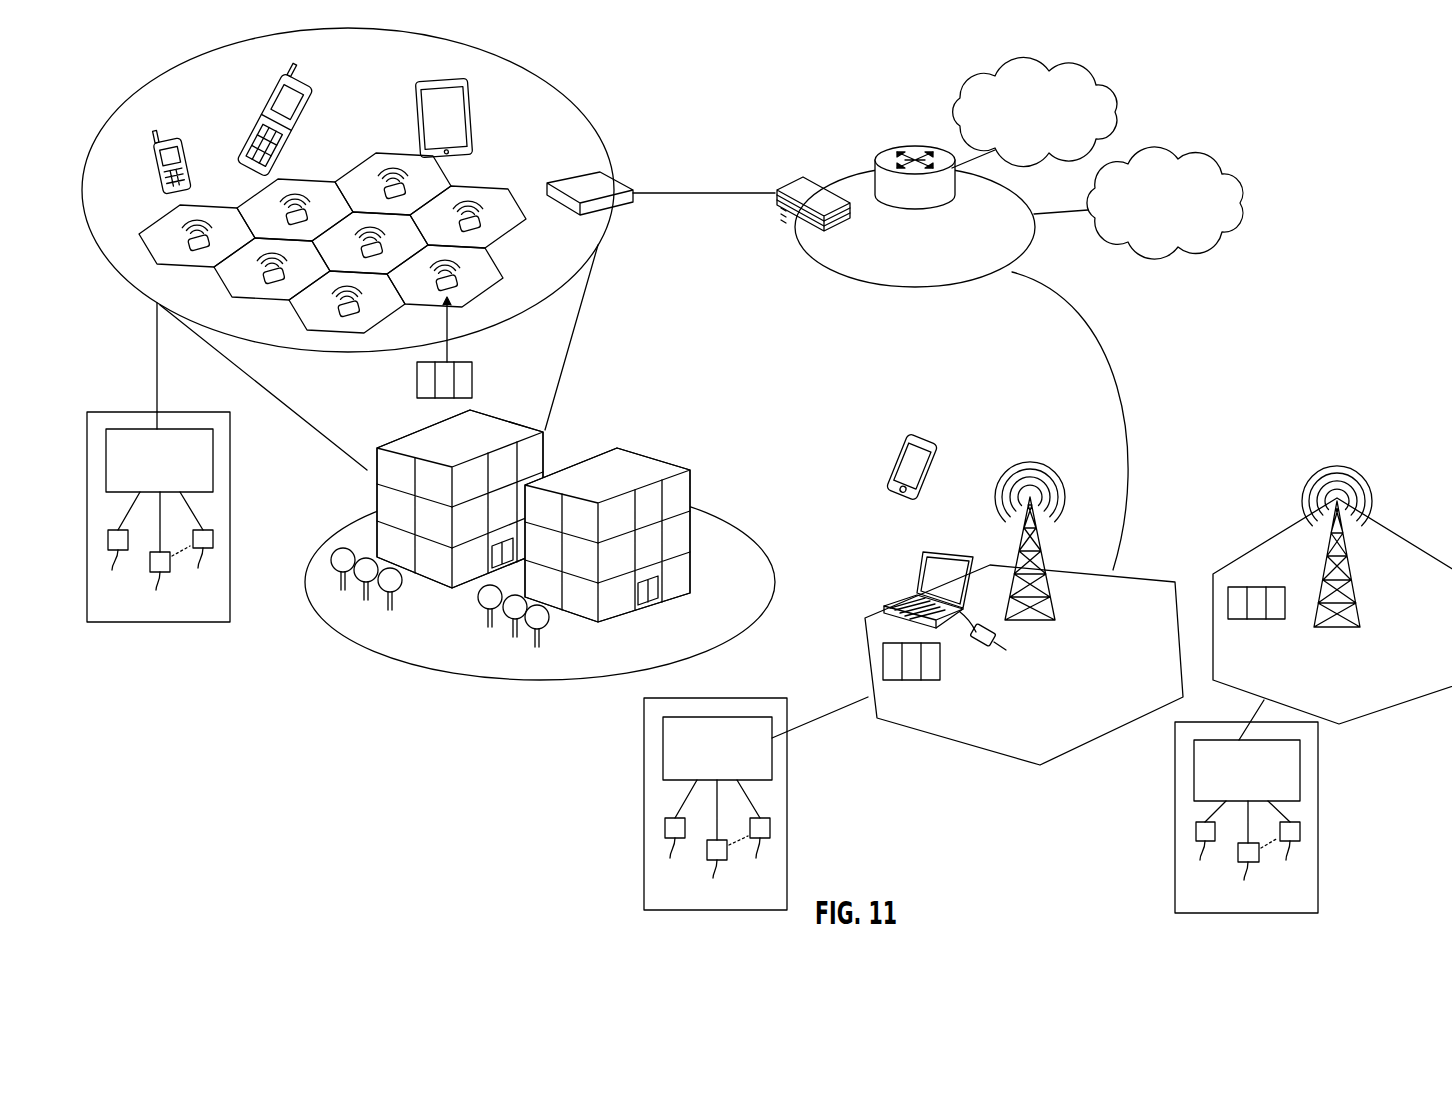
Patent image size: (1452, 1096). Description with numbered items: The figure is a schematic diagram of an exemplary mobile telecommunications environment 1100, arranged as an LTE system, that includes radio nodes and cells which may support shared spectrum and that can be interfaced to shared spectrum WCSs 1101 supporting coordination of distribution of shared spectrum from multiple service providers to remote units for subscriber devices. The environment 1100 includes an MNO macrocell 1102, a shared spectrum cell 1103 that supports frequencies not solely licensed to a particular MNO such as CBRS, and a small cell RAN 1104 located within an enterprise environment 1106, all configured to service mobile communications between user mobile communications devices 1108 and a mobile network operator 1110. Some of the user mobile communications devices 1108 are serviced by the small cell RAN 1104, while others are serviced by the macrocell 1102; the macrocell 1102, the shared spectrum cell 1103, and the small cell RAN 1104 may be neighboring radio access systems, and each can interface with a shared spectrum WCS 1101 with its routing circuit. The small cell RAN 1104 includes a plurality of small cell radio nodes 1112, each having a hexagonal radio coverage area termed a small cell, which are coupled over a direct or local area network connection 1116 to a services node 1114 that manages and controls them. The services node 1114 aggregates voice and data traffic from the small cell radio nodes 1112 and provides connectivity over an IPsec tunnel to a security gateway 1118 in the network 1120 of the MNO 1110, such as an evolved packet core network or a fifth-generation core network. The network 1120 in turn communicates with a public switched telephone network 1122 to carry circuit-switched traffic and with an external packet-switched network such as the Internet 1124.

The mobile telecommunications environment 1100 is at (757, 68).
The shared spectrum WCS 1101 is at (178, 623).
The macrocell RAN 1102 is at (903, 728).
The shared spectrum cell 1103 is at (1332, 595).
The small cell RAN 1104 is at (348, 249).
The enterprise environment 1106 is at (307, 578).
The user mobile communications device 1108 is at (188, 148).
The mobile network operator 1110 is at (927, 196).
The small cell radio node 1112 is at (478, 228).
The services node 1114 is at (622, 178).
The local area network connection 1116 is at (560, 160).
The security gateway 1118 is at (797, 178).
The network 1120 is at (882, 288).
The public switched telephone network 1122 is at (1186, 152).
The Internet 1124 is at (975, 88).